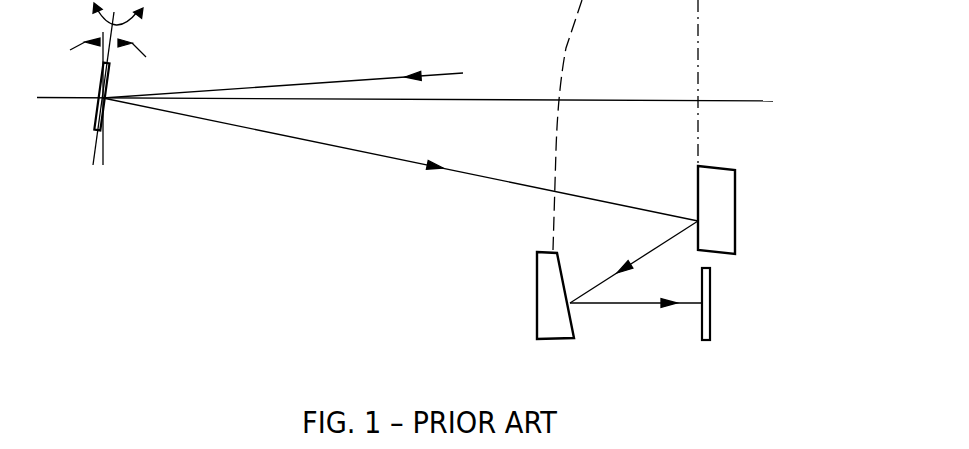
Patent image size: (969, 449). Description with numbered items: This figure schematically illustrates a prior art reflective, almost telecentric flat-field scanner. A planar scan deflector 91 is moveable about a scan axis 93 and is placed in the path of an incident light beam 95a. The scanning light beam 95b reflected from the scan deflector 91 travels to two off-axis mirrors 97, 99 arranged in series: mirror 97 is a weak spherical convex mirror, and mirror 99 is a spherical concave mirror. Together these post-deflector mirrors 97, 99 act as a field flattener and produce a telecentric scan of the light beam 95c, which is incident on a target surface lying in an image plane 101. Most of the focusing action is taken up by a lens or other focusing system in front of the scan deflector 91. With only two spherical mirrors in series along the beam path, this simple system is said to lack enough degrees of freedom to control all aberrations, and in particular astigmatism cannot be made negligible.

The planar scan deflector 91 is at (92, 108).
The scan axis 93 is at (113, 49).
The incident light beam 95a is at (308, 80).
The scanning light beam 95b is at (348, 151).
The telecentrically scanned light beam 95c is at (613, 304).
The weak spherical convex mirror 97 is at (723, 207).
The spherical concave mirror 99 is at (537, 295).
The image plane 101 is at (712, 310).